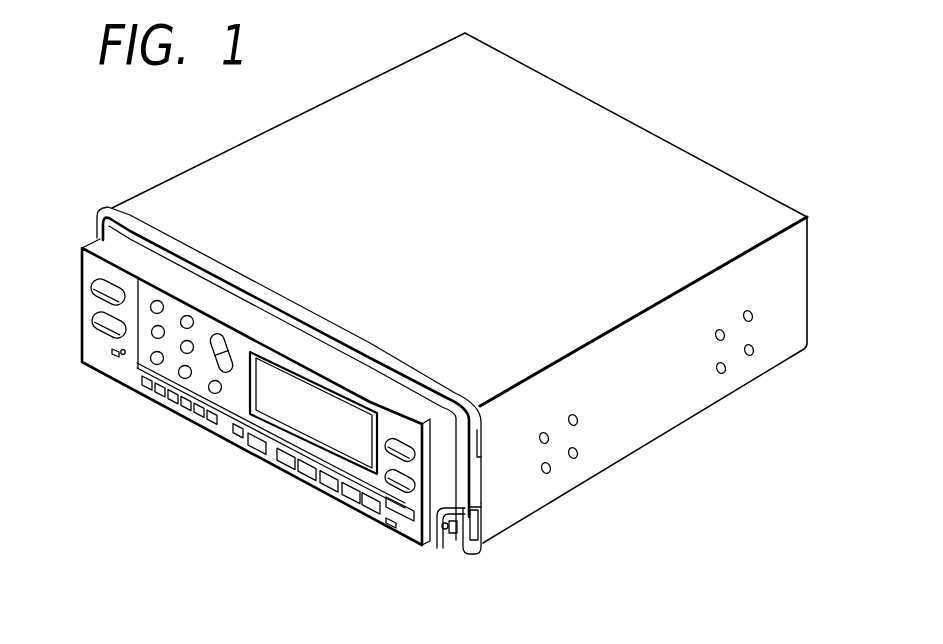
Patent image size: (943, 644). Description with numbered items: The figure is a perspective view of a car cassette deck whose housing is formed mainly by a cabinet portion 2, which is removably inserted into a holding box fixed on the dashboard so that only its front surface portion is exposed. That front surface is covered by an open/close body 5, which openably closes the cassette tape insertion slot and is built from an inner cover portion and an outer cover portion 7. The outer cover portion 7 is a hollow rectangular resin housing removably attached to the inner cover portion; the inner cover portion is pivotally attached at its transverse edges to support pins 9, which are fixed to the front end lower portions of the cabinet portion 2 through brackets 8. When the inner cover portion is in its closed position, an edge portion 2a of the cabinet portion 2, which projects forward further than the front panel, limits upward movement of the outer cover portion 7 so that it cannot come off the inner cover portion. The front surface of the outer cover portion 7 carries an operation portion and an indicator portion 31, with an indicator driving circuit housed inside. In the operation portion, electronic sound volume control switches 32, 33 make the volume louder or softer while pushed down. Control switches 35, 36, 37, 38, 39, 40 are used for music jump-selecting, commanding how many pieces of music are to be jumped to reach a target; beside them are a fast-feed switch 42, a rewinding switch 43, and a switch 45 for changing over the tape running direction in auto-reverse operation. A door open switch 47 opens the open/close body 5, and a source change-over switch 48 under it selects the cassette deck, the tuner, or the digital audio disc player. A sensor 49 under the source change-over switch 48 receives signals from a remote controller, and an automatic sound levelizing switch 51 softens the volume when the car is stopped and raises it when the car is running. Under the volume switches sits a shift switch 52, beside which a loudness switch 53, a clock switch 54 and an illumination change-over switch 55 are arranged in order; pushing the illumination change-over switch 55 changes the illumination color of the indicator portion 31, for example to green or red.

The cabinet portion 2 is at (668, 156).
The edge portion 2a is at (157, 237).
The open/close body 5 is at (82, 261).
The outer cover portion 7 is at (100, 248).
The bracket 8 is at (468, 517).
The support pin 9 is at (477, 549).
The indicator portion 31 is at (320, 402).
The electronic sound volume control switch 32 is at (90, 286).
The electronic sound volume control switch 33 is at (92, 321).
The control switch 35 is at (160, 303).
The control switch 36 is at (192, 343).
The control switch 37 is at (192, 318).
The control switch 38 is at (190, 368).
The control switch 39 is at (138, 366).
The control switch 40 is at (163, 398).
The fast-feed switch 42 is at (225, 342).
The rewinding switch 43 is at (232, 366).
The tape running direction change-over switch 45 is at (245, 452).
The door open switch 47 is at (399, 442).
The source change-over switch 48 is at (388, 487).
The sensor 49 is at (408, 521).
The automatic sound levelizing switch 51 is at (388, 529).
The shift switch 52 is at (112, 357).
The loudness switch 53 is at (148, 390).
The clock switch 54 is at (180, 407).
The illumination change-over switch 55 is at (200, 416).